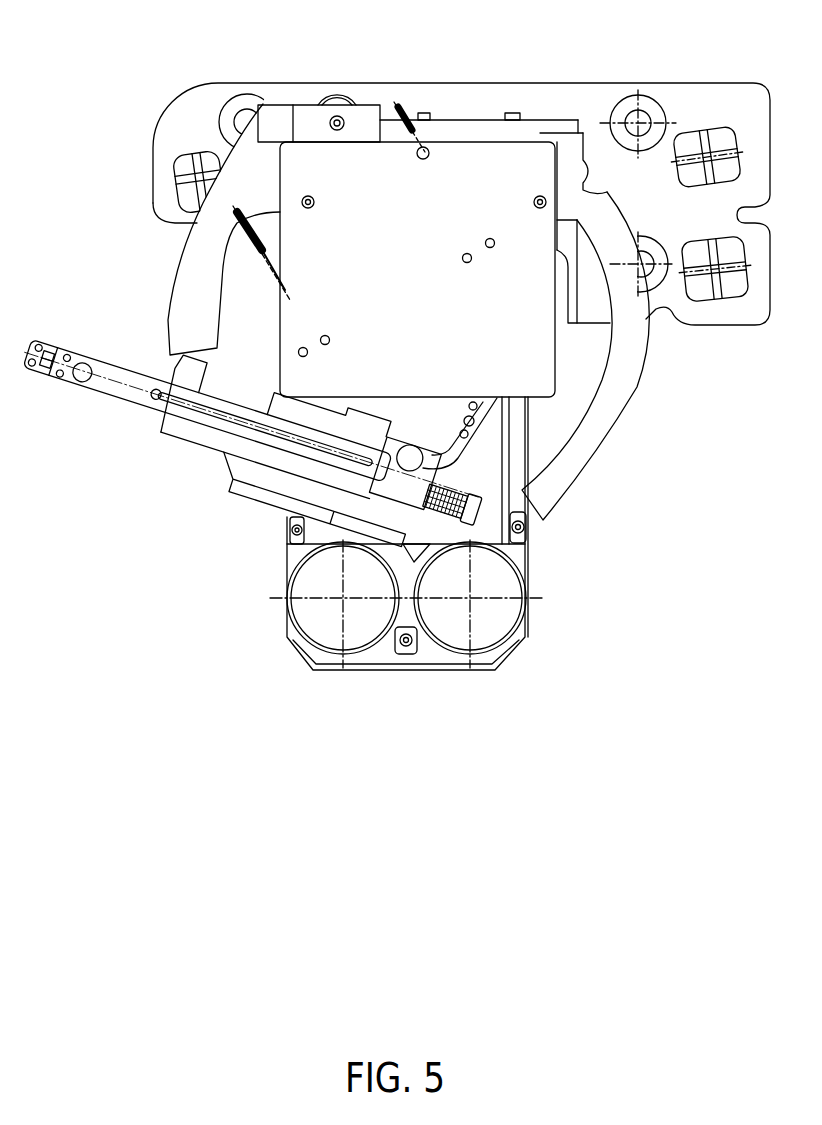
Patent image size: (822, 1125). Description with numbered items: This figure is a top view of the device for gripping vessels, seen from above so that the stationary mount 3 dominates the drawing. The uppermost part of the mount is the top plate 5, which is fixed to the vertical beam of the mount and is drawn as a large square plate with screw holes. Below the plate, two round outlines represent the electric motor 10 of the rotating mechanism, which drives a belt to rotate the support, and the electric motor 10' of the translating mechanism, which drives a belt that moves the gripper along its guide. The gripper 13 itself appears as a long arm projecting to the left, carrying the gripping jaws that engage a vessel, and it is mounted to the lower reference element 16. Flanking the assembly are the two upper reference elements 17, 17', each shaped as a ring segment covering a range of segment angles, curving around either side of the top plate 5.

The stationary mount 3 is at (400, 100).
The top plate 5 is at (466, 167).
The electric motor 10 is at (476, 564).
The electric motor 10' is at (407, 566).
The gripper 13 is at (108, 388).
The lower reference element 16 is at (292, 512).
The upper reference element 17 is at (612, 356).
The upper reference element 17' is at (186, 229).